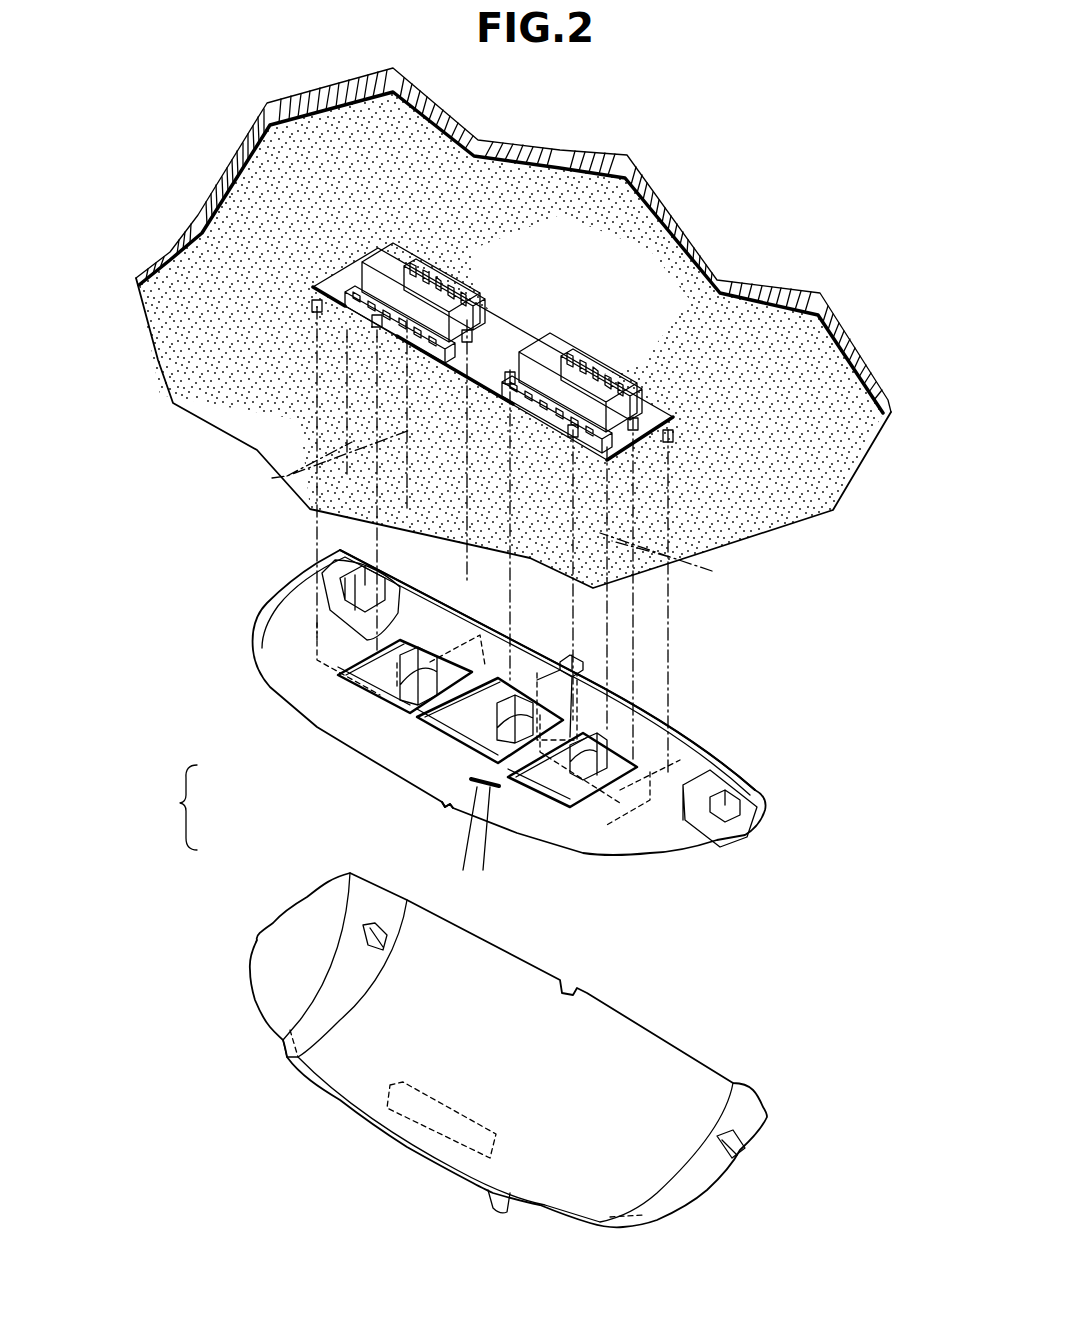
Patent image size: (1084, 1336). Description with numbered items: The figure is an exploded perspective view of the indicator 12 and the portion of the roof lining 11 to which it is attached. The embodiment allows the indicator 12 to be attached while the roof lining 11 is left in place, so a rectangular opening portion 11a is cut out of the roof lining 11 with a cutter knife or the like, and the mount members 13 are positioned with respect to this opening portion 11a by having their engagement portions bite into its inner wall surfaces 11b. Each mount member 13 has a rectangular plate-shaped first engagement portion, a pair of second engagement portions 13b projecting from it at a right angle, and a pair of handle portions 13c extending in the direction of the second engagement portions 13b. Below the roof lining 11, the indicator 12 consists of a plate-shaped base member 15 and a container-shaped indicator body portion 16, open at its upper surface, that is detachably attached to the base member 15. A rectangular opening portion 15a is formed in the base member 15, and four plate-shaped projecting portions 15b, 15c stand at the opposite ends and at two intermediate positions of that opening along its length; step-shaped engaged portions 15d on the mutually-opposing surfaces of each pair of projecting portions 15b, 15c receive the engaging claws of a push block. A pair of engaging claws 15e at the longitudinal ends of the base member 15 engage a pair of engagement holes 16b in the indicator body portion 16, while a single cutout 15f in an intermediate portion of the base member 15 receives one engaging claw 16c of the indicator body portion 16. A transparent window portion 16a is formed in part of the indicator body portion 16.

The roof lining 11 is at (687, 230).
The opening portion 11a is at (508, 327).
The inner wall surfaces 11b is at (448, 365).
The indicator 12 is at (174, 807).
The mount member 13 is at (450, 270).
The second engagement portions 13b is at (436, 268).
The handle portions 13c is at (491, 504).
The base member 15 is at (295, 712).
The opening portion 15a is at (368, 688).
The projecting portions 15b is at (427, 590).
The projecting portions 15c is at (493, 633).
The engaged portions 15d is at (387, 688).
The engaging claws 15e is at (365, 610).
The cutout 15f is at (410, 780).
The indicator body portion 16 is at (287, 892).
The transparent window portion 16a is at (507, 1210).
The engagement holes 16b is at (380, 942).
The engaging claw 16c is at (445, 1110).